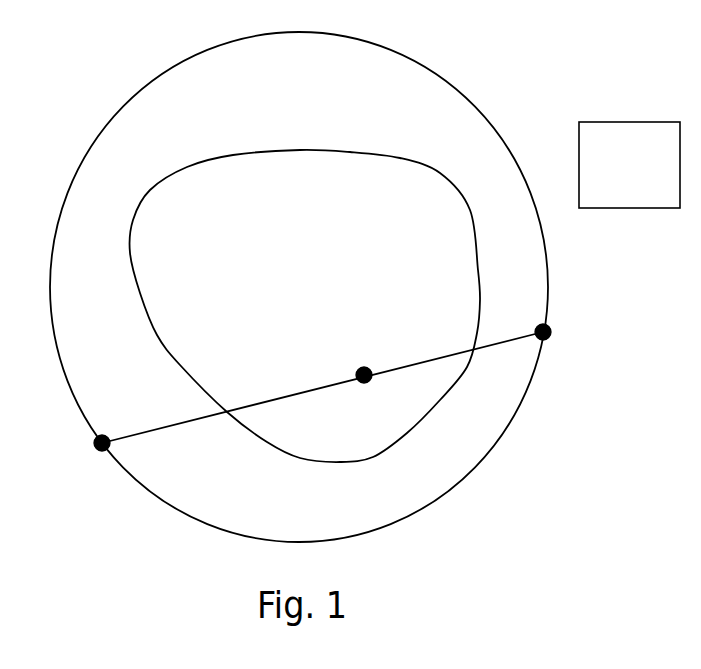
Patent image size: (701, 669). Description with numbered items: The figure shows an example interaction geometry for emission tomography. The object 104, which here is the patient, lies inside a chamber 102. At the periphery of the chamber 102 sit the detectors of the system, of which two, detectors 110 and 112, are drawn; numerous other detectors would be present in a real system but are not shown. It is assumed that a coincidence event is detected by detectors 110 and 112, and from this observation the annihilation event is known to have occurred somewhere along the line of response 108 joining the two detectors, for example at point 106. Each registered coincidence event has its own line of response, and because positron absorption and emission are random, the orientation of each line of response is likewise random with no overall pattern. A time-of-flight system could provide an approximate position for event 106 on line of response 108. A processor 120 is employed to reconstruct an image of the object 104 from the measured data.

The chamber 102 is at (100, 134).
The object 104 is at (264, 253).
The point 106 is at (366, 382).
The line of response 108 is at (113, 442).
The detector 110 is at (94, 443).
The detector 112 is at (551, 330).
The processor 120 is at (652, 183).